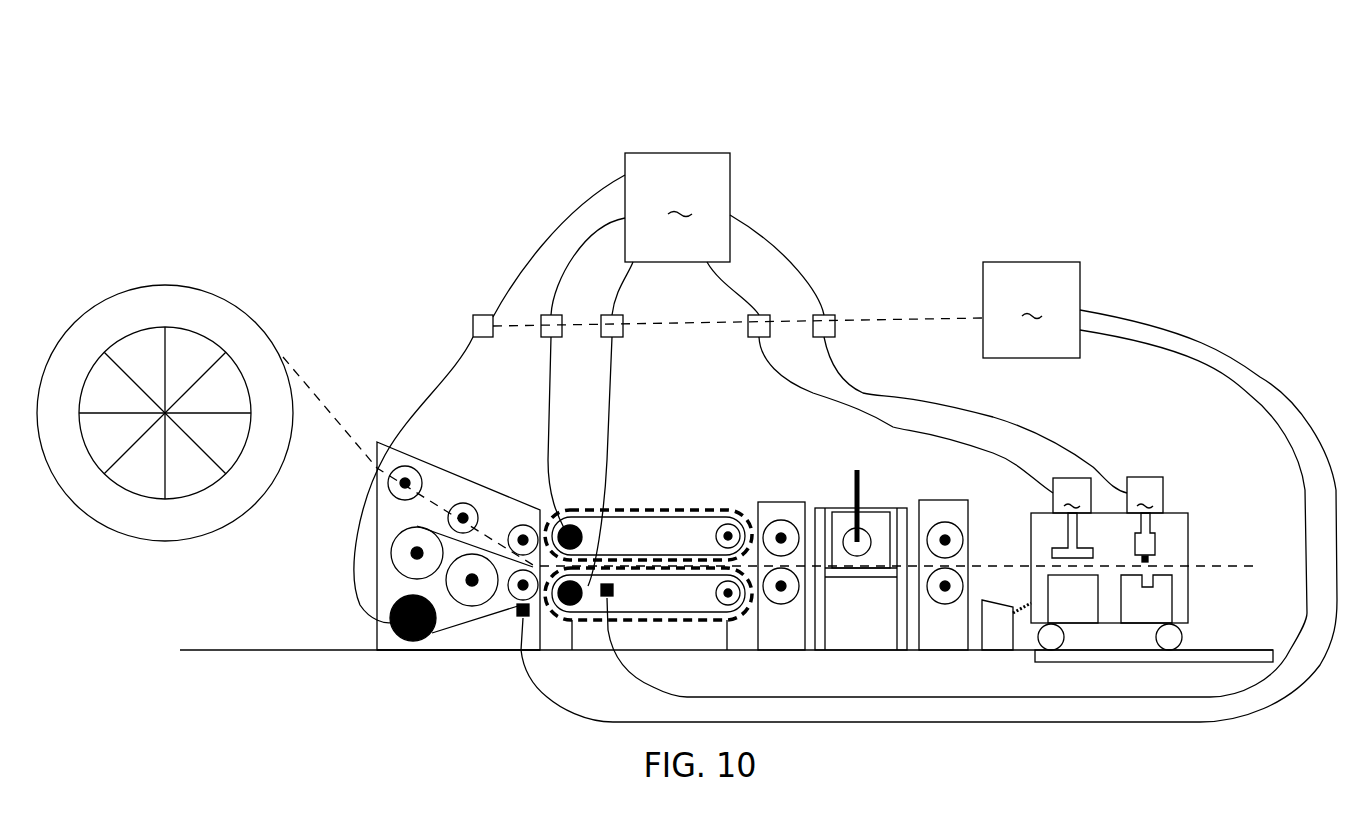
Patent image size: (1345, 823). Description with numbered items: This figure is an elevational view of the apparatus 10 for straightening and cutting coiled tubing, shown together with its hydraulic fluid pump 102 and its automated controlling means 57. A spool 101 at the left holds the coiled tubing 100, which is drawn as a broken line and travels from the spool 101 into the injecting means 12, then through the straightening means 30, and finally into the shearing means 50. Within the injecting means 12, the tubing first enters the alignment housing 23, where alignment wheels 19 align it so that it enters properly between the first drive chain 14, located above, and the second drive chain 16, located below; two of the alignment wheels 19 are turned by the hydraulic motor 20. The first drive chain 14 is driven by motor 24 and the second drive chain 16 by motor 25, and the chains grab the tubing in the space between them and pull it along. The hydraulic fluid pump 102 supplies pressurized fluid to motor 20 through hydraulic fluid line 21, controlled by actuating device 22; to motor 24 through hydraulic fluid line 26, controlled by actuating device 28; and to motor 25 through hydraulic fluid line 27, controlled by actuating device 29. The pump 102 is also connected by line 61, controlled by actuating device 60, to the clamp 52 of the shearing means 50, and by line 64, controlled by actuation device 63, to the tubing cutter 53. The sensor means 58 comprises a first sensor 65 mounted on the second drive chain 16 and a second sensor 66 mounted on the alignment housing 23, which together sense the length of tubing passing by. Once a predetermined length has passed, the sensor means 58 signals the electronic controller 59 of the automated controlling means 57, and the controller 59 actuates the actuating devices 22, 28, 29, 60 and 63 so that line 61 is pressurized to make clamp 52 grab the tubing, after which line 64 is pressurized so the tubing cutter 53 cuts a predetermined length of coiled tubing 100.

The apparatus 10 is at (300, 125).
The spool 101 is at (115, 292).
The coiled tubing 100 is at (323, 407).
The injecting means 12 is at (513, 474).
The alignment wheels 19 is at (393, 551).
The motor 20 is at (390, 587).
The alignment housing 23 is at (452, 655).
The second sensor 66 is at (517, 612).
The hydraulic fluid line 21 is at (432, 386).
The actuating device 22 is at (471, 324).
The actuating device 28 is at (540, 322).
The actuating device 29 is at (603, 318).
The actuating device 60 is at (752, 330).
The actuation device 63 is at (826, 322).
The hydraulic fluid pump 102 is at (677, 207).
The hydraulic fluid line 26 is at (548, 415).
The hydraulic fluid line 27 is at (583, 461).
The first drive chain 14 is at (686, 522).
The second drive chain 16 is at (663, 612).
The motor 24 is at (562, 525).
The motor 25 is at (566, 605).
The first sensor 65 is at (615, 590).
The sensor means 58 is at (605, 600).
The straightening means 30 is at (822, 492).
The line 61 is at (835, 407).
The line 64 is at (907, 392).
The automated controlling means 57 is at (1030, 262).
The electronic controller 59 is at (1031, 310).
The shearing means 50 is at (1145, 440).
The clamp 52 is at (1145, 519).
The tubing cutter 53 is at (1072, 518).